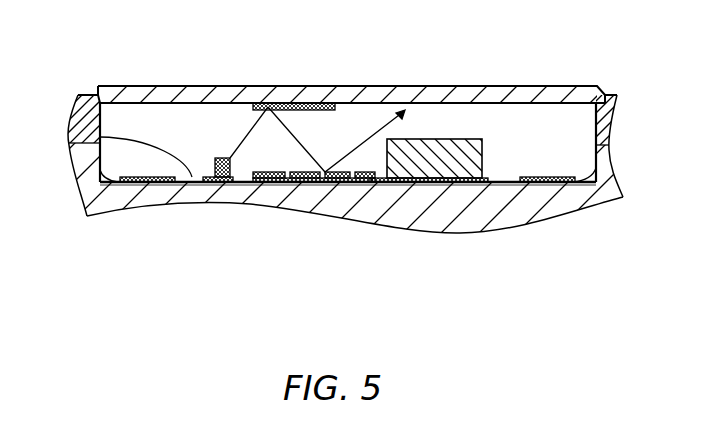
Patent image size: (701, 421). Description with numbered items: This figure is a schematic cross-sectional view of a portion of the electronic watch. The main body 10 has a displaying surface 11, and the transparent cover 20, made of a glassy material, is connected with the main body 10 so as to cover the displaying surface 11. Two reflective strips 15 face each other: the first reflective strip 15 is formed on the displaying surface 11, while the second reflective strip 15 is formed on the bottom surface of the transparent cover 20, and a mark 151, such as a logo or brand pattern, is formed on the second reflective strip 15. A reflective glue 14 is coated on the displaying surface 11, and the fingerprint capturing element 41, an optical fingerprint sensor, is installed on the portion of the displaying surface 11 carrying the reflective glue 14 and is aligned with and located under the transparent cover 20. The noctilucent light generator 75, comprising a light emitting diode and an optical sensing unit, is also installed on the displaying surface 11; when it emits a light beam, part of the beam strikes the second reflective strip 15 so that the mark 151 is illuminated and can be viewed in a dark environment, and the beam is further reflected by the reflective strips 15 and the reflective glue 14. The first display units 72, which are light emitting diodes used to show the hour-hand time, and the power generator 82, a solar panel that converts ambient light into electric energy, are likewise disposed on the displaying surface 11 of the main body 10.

The main body 10 is at (512, 217).
The displaying surface 11 is at (98, 136).
The reflective glue 14 is at (431, 184).
The reflective strip 15 is at (250, 115).
The mark 151 is at (307, 101).
The transparent cover 20 is at (125, 98).
The fingerprint capturing element 41 is at (452, 143).
The first display unit 72 is at (100, 176).
The noctilucent light generator 75 is at (213, 157).
The power generator 82 is at (357, 184).